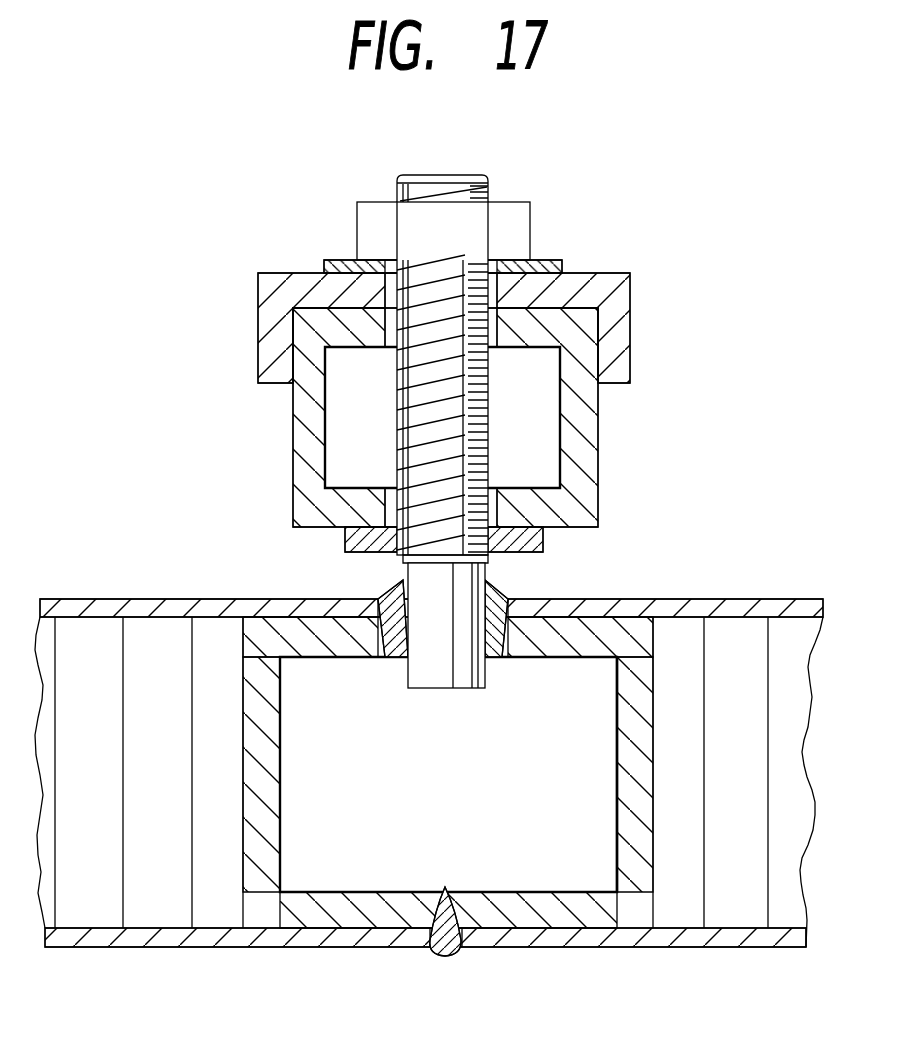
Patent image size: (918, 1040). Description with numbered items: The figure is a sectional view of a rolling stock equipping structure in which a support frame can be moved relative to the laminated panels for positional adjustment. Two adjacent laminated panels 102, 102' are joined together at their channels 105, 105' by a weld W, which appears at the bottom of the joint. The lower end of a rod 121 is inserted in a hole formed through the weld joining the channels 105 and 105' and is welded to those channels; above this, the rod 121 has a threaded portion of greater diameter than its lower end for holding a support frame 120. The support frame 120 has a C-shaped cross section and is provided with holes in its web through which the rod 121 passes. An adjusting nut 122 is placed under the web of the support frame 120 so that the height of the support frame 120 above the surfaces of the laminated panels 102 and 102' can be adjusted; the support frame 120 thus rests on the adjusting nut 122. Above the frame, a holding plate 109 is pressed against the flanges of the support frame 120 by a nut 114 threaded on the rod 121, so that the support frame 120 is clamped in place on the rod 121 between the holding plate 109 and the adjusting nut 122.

The rod 121 is at (422, 187).
The nut 114 is at (520, 210).
The holding plate 109 is at (602, 282).
The support frame 120 is at (300, 410).
The adjusting nut 122 is at (543, 543).
The laminated panel 102 is at (429, 733).
The laminated panel 102' is at (763, 730).
The channel 105 is at (448, 772).
The channel 105' is at (565, 769).
The weld W is at (457, 950).